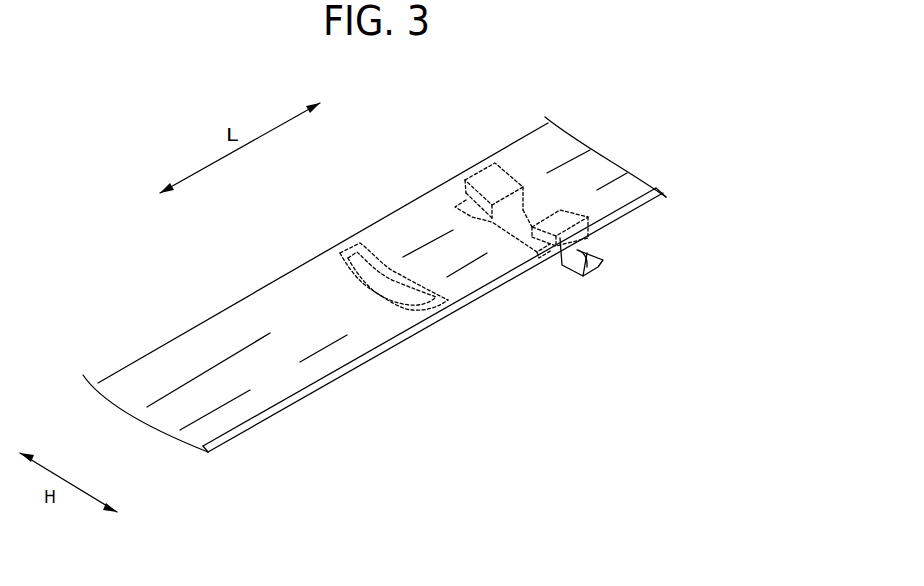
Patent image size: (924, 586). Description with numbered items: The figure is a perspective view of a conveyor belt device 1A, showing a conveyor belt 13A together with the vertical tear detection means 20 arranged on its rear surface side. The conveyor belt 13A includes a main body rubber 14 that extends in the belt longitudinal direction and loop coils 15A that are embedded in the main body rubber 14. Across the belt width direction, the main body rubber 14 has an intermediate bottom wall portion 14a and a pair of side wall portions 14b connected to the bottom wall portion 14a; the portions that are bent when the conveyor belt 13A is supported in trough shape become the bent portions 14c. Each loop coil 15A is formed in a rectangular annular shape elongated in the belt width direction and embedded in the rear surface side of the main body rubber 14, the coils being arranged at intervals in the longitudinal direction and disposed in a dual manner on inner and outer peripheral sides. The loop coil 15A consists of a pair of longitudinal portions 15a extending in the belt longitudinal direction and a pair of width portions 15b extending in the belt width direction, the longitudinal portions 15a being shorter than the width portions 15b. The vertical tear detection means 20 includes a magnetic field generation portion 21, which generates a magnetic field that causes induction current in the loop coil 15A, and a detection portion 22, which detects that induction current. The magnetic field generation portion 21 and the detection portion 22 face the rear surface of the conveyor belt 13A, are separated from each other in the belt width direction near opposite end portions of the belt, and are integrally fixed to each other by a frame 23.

The heat exchanger assembly 1A is at (660, 113).
The conveyor belt 13A is at (196, 303).
The main body rubber 14 is at (437, 182).
The bottom wall portion 14a is at (610, 160).
The side wall portion 14b is at (523, 153).
The bent portion 14c is at (170, 390).
The loop coil 15A is at (316, 265).
The longitudinal portion 15a is at (338, 250).
The width portion 15b is at (378, 260).
The vertical tear detection means 20 is at (586, 252).
The magnetic field generation portion 21 is at (473, 222).
The detection portion 22 is at (547, 242).
The frame 23 is at (600, 263).